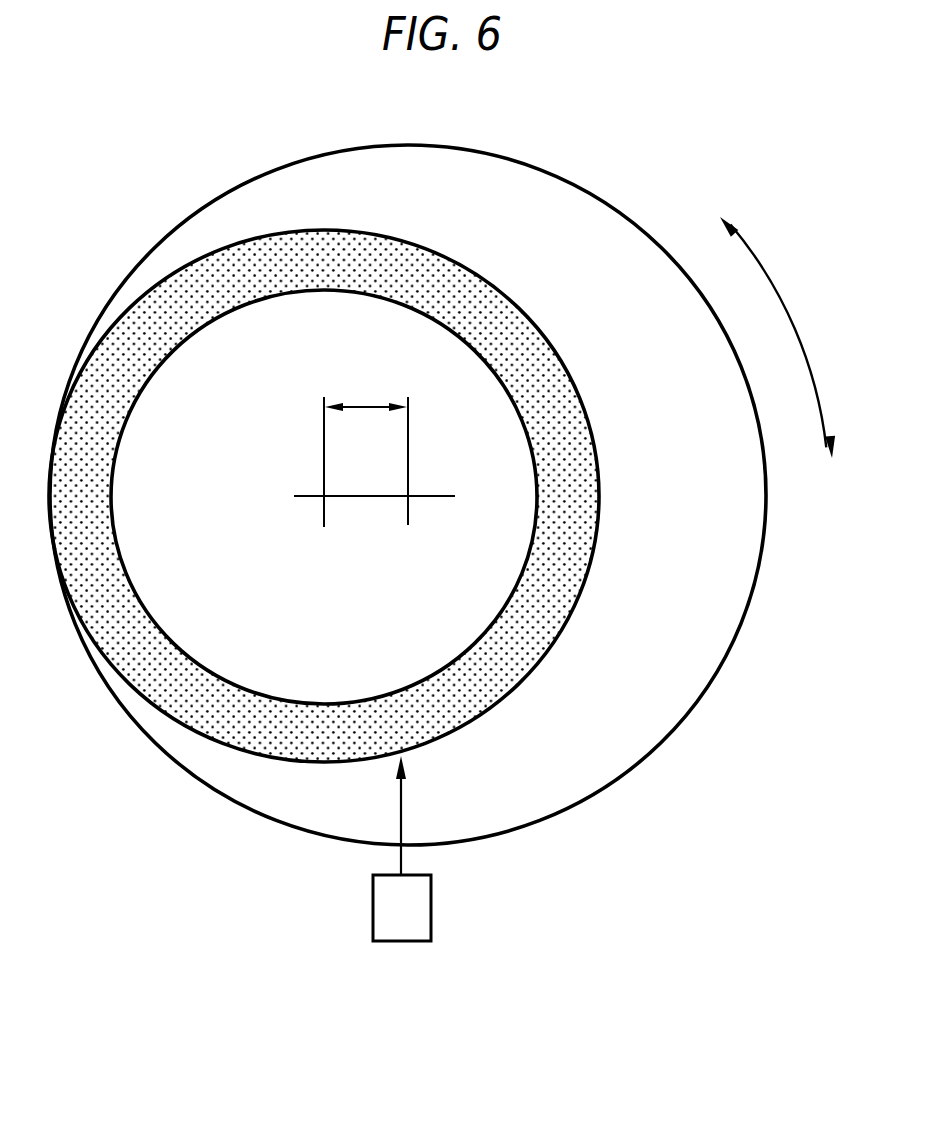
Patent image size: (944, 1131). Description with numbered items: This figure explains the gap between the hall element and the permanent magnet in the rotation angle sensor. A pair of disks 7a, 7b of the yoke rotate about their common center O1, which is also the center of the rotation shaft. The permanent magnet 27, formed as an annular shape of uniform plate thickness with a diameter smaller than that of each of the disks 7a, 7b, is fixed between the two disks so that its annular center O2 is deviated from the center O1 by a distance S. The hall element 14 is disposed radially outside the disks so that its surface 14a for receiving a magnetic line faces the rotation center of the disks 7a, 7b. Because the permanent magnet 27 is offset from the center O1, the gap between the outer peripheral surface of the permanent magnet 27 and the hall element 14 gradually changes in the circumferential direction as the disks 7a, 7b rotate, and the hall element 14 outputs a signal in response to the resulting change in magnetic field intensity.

The disk 7a is at (442, 495).
The disk 7b is at (662, 682).
The permanent magnet 27 is at (233, 723).
The hall element 14 is at (431, 912).
The surface for receiving a magnetic line 14a is at (392, 875).
The center of each of the disks O1 is at (410, 498).
The annular center O2 is at (323, 498).
The distance S is at (366, 393).